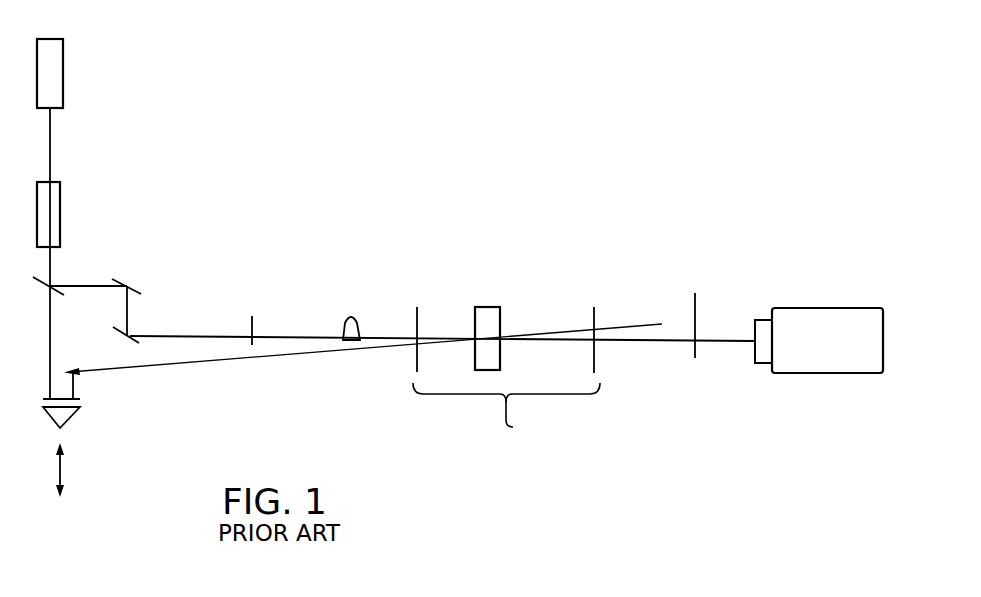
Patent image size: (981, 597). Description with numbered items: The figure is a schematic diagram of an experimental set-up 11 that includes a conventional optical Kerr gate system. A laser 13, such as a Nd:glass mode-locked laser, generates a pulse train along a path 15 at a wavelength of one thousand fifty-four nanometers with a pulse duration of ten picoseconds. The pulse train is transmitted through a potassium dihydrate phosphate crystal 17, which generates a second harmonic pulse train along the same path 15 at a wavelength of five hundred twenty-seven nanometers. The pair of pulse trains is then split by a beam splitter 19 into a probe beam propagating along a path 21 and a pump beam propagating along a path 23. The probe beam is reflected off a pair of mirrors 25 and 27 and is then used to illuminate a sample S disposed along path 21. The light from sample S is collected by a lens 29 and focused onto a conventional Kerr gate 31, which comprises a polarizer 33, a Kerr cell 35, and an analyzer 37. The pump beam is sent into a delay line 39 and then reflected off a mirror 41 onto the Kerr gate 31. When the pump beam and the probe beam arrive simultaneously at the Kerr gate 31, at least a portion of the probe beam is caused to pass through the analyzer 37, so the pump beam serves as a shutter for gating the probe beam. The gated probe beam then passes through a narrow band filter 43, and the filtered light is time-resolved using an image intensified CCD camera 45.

The experimental set-up 11 is at (457, 252).
The laser 13 is at (50, 38).
The path 15 is at (50, 152).
The potassium dihydrate phosphate (KDP) crystal 17 is at (54, 216).
The beam splitter 19 is at (51, 284).
The path 21 is at (97, 283).
The path 23 is at (49, 339).
The mirror 25 is at (139, 293).
The mirror 27 is at (127, 336).
The lens 29 is at (352, 316).
The Kerr gate 31 is at (506, 420).
The polarizer 33 is at (434, 313).
The Kerr cell 35 is at (501, 323).
The analyzer 37 is at (596, 322).
The delay line 39 is at (68, 412).
The mirror 41 is at (74, 377).
The narrow band filter 43 is at (696, 350).
The image intensified CCD camera 45 is at (840, 355).
The sample S is at (254, 320).